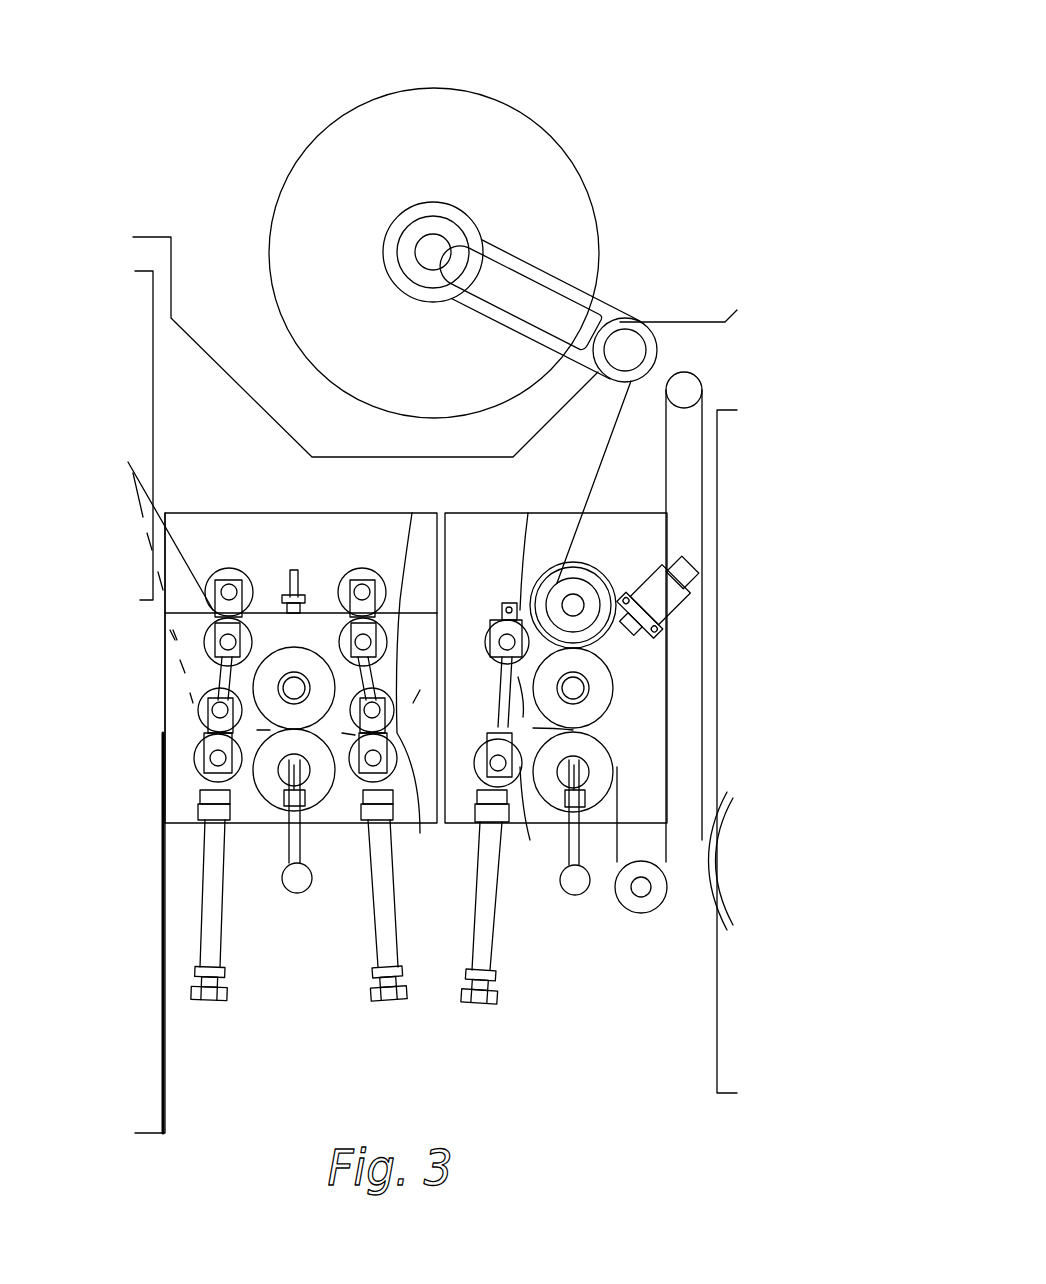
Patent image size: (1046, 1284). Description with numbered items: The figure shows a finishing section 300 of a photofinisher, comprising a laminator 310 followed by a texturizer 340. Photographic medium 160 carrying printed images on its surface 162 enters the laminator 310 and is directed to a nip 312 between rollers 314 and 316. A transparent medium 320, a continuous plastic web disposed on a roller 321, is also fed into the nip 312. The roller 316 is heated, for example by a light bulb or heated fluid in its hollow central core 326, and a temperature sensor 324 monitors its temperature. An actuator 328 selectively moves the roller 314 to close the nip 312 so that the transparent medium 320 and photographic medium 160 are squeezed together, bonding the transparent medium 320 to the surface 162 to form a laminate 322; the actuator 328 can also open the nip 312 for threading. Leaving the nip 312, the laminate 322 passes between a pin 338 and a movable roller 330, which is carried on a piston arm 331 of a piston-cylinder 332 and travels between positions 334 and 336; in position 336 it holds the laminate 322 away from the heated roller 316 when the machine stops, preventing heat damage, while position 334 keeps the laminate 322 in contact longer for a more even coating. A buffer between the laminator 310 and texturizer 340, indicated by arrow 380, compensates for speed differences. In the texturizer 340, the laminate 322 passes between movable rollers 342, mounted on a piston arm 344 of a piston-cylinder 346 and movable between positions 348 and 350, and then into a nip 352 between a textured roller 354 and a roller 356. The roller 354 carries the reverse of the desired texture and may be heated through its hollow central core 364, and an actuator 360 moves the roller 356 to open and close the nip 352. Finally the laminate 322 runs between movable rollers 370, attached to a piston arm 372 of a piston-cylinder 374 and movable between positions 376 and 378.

The finishing section 300 is at (716, 80).
The roller 321 is at (452, 208).
The transparent medium 320 is at (603, 472).
The photographic medium 160 is at (713, 400).
The surface 162 is at (617, 805).
The arrow 380 is at (445, 832).
The laminate 322 is at (420, 516).
The movable rollers 370 is at (175, 738).
The texturizer 340 is at (200, 583).
The position 376 is at (217, 613).
The piston arm 372 is at (217, 673).
The position 378 is at (217, 730).
The piston-cylinder 374 is at (212, 940).
The temperature sensor 324 is at (290, 570).
The position 348 is at (400, 600).
The movable rollers 342 is at (349, 562).
The piston arm 344 is at (374, 700).
The piston-cylinder 346 is at (380, 942).
The position 350 is at (418, 823).
The roller 354 is at (298, 672).
The hollow central core 364 is at (292, 686).
The nip 352 is at (252, 795).
The roller 356 is at (277, 828).
The actuator 360 is at (299, 890).
The laminator 310 is at (465, 548).
The pin 338 is at (511, 604).
The position 334 is at (503, 640).
The movable roller 330 is at (492, 652).
The piston arm 331 is at (496, 692).
The position 336 is at (530, 782).
The piston-cylinder 332 is at (485, 928).
The roller 316 is at (600, 673).
The hollow central core 326 is at (578, 688).
The nip 312 is at (573, 730).
The roller 314 is at (598, 754).
The actuator 328 is at (586, 891).